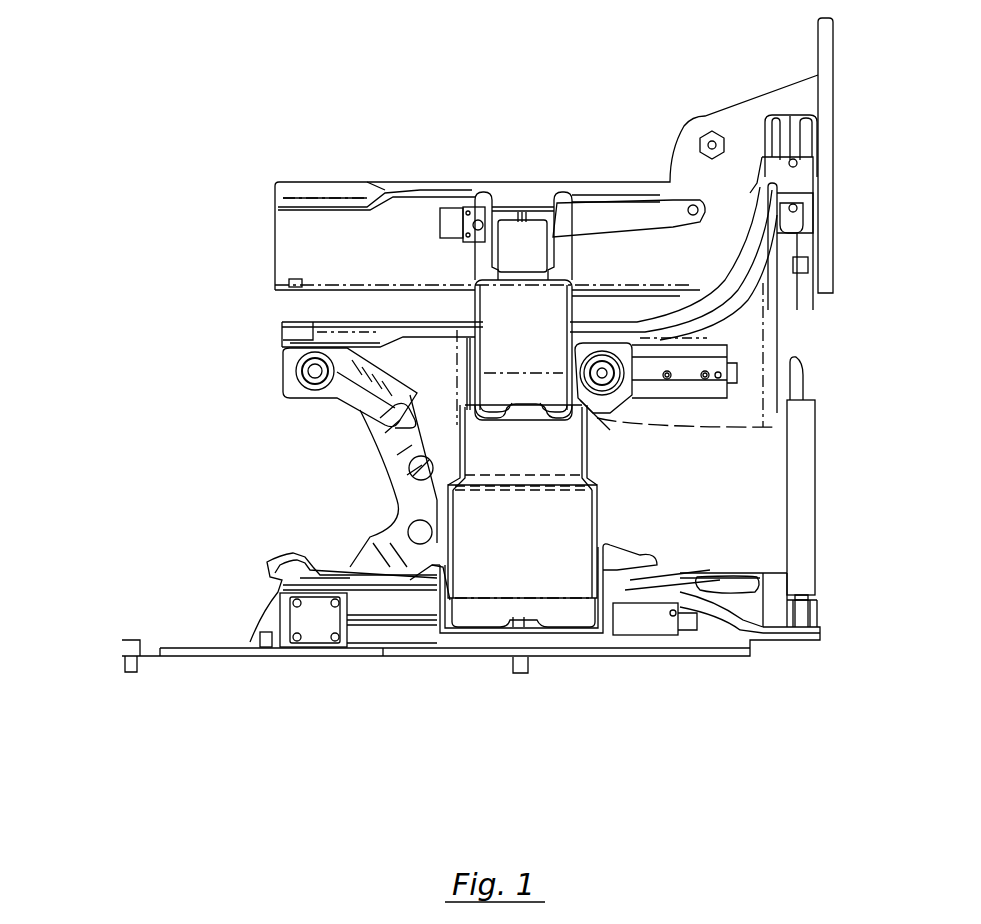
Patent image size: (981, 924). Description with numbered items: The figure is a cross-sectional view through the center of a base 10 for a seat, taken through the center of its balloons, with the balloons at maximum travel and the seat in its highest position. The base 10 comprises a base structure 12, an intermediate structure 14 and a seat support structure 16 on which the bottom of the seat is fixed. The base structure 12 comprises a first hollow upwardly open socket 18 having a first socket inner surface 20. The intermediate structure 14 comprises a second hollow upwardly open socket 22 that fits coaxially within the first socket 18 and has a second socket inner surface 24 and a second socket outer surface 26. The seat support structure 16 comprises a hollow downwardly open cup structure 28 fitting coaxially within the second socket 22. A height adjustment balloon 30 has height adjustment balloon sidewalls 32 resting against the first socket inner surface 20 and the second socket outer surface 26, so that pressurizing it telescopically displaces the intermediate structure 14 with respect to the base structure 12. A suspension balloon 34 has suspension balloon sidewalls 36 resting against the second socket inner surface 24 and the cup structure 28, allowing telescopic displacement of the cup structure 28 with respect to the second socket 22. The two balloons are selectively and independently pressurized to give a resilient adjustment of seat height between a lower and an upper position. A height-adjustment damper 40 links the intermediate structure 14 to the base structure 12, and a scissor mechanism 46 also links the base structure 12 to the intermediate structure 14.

The base 10 is at (150, 366).
The base structure 12 is at (460, 633).
The intermediate structure 14 is at (283, 350).
The seat support structure 16 is at (277, 205).
The first hollow upwardly open socket 18 is at (578, 632).
The first socket inner surface 20 is at (557, 630).
The second hollow upwardly open socket 22 is at (457, 405).
The second socket inner surface 24 is at (470, 375).
The second socket outer surface 26 is at (457, 432).
The cup structure 28 is at (556, 234).
The height adjustment balloon 30 is at (445, 538).
The height adjustment balloon sidewalls 32 is at (283, 595).
The suspension balloon 34 is at (477, 303).
The suspension balloon sidewalls 36 is at (509, 222).
The height-adjustment damper 40 is at (810, 500).
The scissor mechanism 46 is at (337, 400).